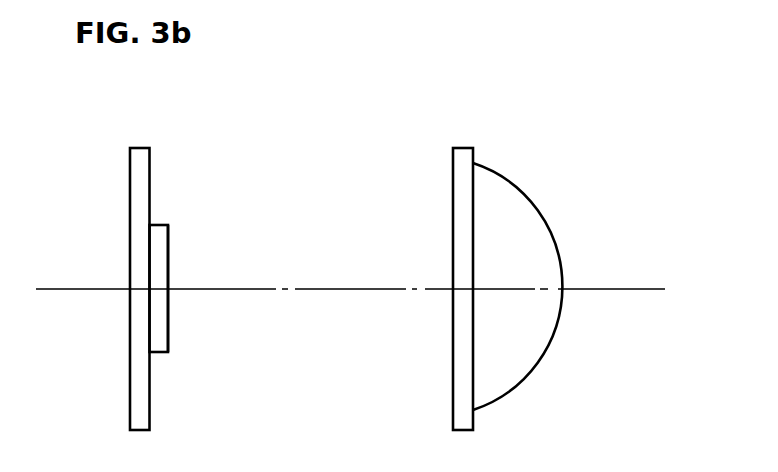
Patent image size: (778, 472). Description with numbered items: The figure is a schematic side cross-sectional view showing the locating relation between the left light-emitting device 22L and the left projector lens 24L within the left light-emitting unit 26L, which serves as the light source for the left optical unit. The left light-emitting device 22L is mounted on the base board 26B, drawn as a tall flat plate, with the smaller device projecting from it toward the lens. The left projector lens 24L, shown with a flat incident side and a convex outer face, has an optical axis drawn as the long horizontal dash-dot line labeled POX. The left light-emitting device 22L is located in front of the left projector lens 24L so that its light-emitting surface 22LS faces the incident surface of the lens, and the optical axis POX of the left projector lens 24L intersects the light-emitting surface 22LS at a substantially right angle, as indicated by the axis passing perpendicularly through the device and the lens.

The base board 26B is at (138, 182).
The left light-emitting device 22L is at (157, 254).
The light-emitting surface 22LS is at (168, 273).
The left projector lens 24L is at (550, 228).
The left light-emitting unit 26L is at (331, 116).
The optical axis POX is at (376, 289).